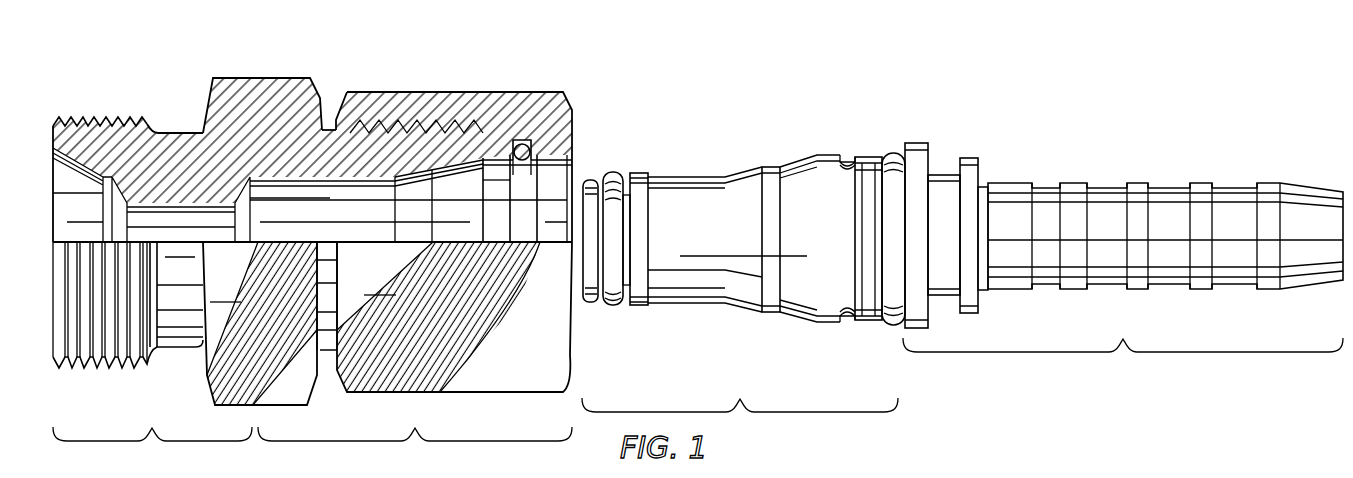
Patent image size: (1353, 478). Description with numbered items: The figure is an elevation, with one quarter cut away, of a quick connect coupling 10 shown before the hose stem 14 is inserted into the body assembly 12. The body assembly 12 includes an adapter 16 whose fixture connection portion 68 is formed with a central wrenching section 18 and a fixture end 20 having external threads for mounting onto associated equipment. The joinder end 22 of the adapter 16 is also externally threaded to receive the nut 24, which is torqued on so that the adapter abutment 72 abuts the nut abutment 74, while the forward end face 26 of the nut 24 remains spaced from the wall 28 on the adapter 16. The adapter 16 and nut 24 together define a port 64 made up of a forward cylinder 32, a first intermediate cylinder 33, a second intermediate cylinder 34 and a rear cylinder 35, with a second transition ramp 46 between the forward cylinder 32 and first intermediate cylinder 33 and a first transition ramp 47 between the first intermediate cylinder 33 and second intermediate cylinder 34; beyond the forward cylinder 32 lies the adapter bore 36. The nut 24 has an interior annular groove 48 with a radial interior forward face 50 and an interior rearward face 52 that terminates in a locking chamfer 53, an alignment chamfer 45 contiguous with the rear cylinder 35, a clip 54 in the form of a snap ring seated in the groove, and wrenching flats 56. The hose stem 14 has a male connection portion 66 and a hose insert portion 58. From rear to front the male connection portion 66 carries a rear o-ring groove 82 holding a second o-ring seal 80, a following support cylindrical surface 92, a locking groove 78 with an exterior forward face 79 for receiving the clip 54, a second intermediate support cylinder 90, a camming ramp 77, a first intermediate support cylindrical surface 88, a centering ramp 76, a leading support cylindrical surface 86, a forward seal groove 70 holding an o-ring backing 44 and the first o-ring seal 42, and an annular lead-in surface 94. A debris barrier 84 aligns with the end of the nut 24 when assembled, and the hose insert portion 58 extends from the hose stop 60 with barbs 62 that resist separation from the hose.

The quick connect coupling 10 is at (1009, 58).
The body assembly 12 is at (157, 53).
The hose stem 14 is at (1100, 65).
The adapter 16 is at (260, 323).
The central wrenching section 18 is at (270, 87).
The fixture end 20 is at (98, 117).
The joinder end 22 is at (335, 150).
The nut 24 is at (454, 242).
The forward end face 26 is at (332, 392).
The wall 28 is at (328, 105).
The forward cylinder 32 is at (282, 185).
The first intermediate cylinder 33 is at (430, 173).
The second intermediate cylinder 34 is at (495, 167).
The rear cylinder 35 is at (565, 173).
The adapter bore 36 is at (180, 210).
The first o-ring seal 42 is at (608, 305).
The o-ring backing 44 is at (647, 170).
The alignment chamfer 45 is at (540, 163).
The second transition ramp 46 is at (390, 192).
The first transition ramp 47 is at (465, 185).
The interior annular groove 48 is at (522, 140).
The interior forward face 50 is at (518, 147).
The interior rearward face 52 is at (530, 147).
The locking chamfer 53 is at (537, 160).
The clip 54 is at (537, 153).
The wrenching flats 56 is at (470, 392).
The hose insert portion 58 is at (1123, 356).
The hose stop 60 is at (977, 312).
The barbs 62 is at (1200, 182).
The port 64 is at (415, 443).
The male connection portion 66 is at (740, 413).
The fixture connection portion 68 is at (152, 443).
The forward seal groove 70 is at (625, 303).
The adapter abutment 72 is at (540, 170).
The nut abutment 74 is at (477, 187).
The centering ramp 76 is at (743, 172).
The camming ramp 77 is at (803, 158).
The locking groove 78 is at (847, 318).
The exterior forward face 79 is at (845, 165).
The second o-ring seal 80 is at (893, 153).
The rear o-ring groove 82 is at (882, 163).
The debris barrier 84 is at (927, 143).
The leading support cylindrical surface 86 is at (697, 305).
The first intermediate support cylindrical surface 88 is at (768, 313).
The second intermediate support cylinder 90 is at (828, 323).
The following support cylindrical surface 92 is at (868, 321).
The annular lead-in surface 94 is at (593, 302).